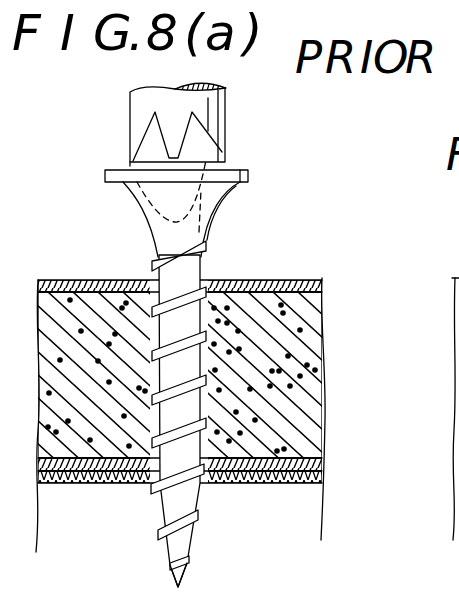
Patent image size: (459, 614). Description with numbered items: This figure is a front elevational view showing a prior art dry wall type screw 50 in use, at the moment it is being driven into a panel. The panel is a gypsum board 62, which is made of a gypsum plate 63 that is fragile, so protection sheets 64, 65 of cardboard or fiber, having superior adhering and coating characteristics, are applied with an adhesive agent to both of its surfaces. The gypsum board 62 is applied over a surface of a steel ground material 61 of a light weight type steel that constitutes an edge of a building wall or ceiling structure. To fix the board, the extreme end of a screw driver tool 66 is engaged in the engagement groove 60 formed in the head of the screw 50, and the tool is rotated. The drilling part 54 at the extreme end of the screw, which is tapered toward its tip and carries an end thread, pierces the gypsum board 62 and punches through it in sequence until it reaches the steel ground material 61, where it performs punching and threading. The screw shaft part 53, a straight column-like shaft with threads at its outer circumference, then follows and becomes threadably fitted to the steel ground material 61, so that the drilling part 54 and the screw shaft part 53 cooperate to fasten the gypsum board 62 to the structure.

The screw 50 is at (189, 335).
The screw shaft part 53 is at (204, 262).
The drilling part 54 is at (163, 551).
The engagement groove 60 is at (210, 158).
The steel ground material 61 is at (322, 483).
The gypsum board 62 is at (225, 385).
The gypsum plate 63 is at (322, 402).
The protection sheet 64 is at (288, 279).
The protection sheet 65 is at (322, 455).
The screw driver tool 66 is at (137, 122).